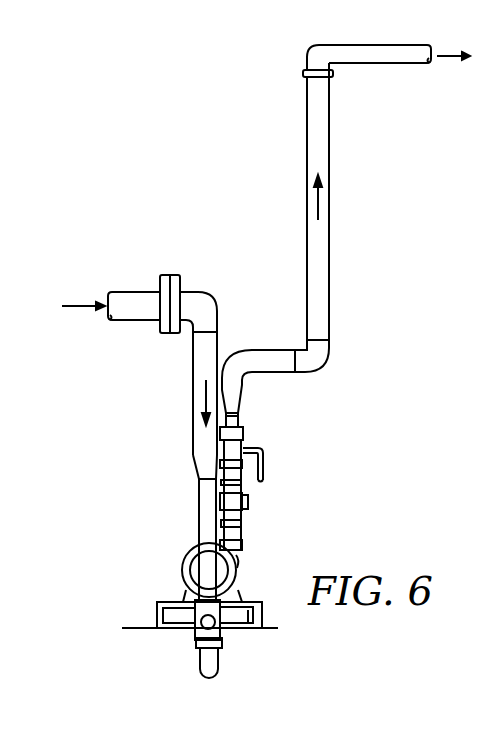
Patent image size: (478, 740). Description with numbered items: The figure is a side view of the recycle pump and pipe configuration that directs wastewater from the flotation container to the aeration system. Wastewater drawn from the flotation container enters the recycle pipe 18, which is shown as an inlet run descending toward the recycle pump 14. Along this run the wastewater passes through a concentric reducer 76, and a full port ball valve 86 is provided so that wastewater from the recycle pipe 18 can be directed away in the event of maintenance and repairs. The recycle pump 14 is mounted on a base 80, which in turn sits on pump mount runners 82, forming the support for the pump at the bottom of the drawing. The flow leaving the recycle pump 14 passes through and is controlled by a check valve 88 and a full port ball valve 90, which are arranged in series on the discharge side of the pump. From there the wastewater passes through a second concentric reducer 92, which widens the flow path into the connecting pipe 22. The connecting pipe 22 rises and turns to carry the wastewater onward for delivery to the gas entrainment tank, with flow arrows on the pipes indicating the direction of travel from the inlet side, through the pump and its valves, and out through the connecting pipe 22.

The recycle pump 14 is at (187, 558).
The recycle pipe 18 is at (193, 382).
The connecting pipe 22 is at (329, 238).
The concentric reducer 76 is at (193, 467).
The base 80 is at (160, 602).
The pump mount runners 82 is at (248, 628).
The full port ball valve 86 is at (193, 630).
The check valve 88 is at (243, 517).
The full port ball valve 90 is at (243, 438).
The concentric reducer 92 is at (238, 400).